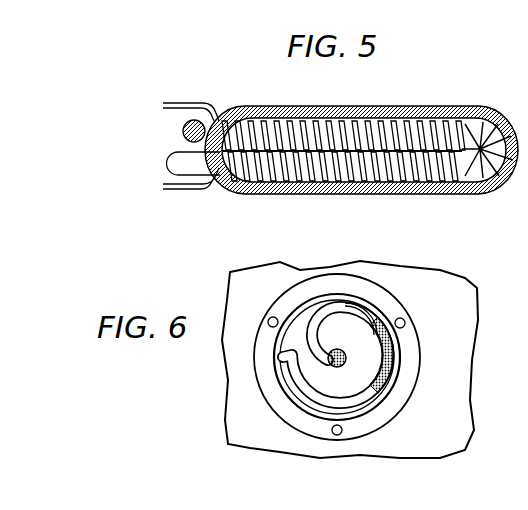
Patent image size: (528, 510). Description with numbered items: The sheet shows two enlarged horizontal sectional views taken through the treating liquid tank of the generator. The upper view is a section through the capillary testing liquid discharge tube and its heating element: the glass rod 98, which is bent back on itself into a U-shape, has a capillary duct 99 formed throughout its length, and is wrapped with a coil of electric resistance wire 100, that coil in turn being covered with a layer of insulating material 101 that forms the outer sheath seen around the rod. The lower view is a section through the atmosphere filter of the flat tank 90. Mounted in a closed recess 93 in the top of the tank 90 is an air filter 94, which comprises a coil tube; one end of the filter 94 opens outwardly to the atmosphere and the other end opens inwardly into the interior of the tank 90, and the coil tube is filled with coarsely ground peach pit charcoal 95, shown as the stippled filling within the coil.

In FIG. 6, the flat tank 90 is at (485, 284).
In FIG. 6, the closed recess 93 is at (303, 312).
In FIG. 6, the air filter 94 is at (376, 320).
In FIG. 6, the coarsely ground peach pit charcoal 95 is at (398, 357).
In FIG. 5, the glass rod 98 is at (185, 127).
In FIG. 5, the capillary duct 99 is at (187, 135).
In FIG. 5, the coil of electric resistance wire 100 is at (429, 122).
In FIG. 5, the layer of insulating material 101 is at (343, 106).